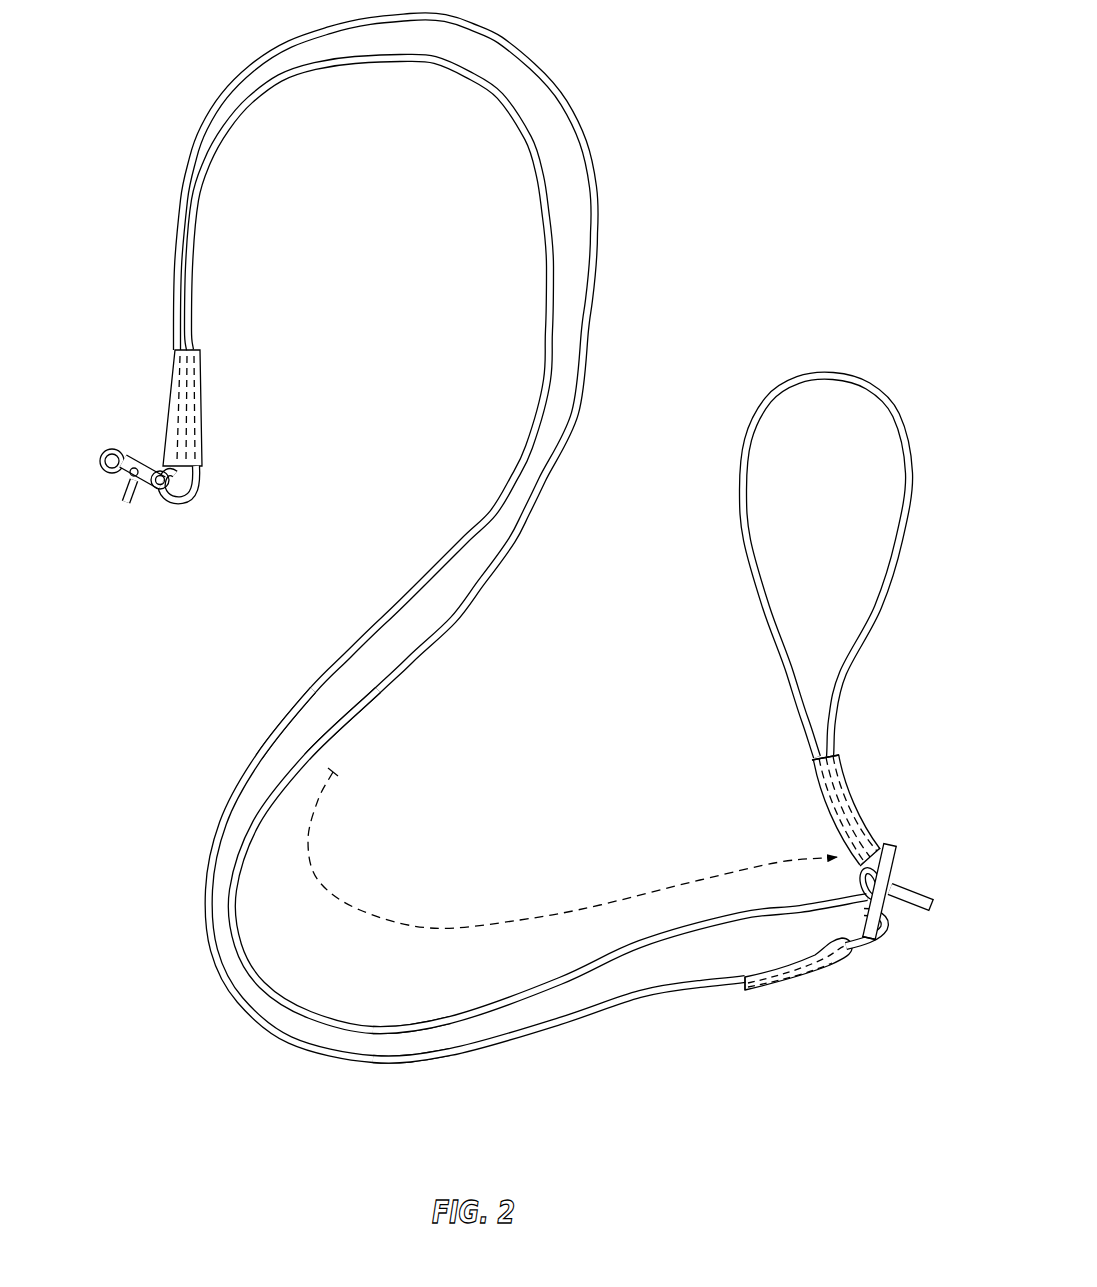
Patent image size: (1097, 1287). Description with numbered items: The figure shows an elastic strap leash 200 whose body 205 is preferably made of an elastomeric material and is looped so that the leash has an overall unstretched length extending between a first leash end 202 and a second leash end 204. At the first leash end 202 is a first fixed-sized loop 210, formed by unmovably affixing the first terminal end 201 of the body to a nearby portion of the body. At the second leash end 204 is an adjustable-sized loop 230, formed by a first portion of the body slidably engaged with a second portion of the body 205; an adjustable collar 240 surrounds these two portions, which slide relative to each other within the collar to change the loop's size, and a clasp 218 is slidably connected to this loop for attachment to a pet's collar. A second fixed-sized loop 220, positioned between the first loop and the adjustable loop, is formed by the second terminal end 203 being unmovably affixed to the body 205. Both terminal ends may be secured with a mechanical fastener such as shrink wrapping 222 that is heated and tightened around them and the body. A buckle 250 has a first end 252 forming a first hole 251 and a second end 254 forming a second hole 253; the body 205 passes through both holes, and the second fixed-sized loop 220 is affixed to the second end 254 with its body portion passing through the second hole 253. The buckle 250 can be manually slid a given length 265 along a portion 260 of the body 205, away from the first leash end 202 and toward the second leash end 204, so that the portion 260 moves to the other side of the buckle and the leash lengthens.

The leash 200 is at (522, 537).
The first leash end 202 is at (846, 674).
The first fixed-sized loop 210 is at (920, 414).
The first terminal end 201 is at (847, 802).
The shrink wrapping 222 is at (841, 758).
The first hole 251 is at (884, 843).
The first end 252 is at (906, 838).
The buckle 250 is at (870, 873).
The second hole 253 is at (863, 888).
The second end 254 is at (882, 923).
The second fixed-sized loop 220 is at (878, 968).
The second terminal end 203 is at (821, 988).
The body 205 is at (620, 1001).
The portion of the body 260 is at (343, 1016).
The given length 265 is at (440, 927).
The adjustable collar 240 is at (203, 430).
The adjustable-sized loop 230 is at (208, 490).
The clasp 218 is at (101, 482).
The second leash end 204 is at (107, 541).